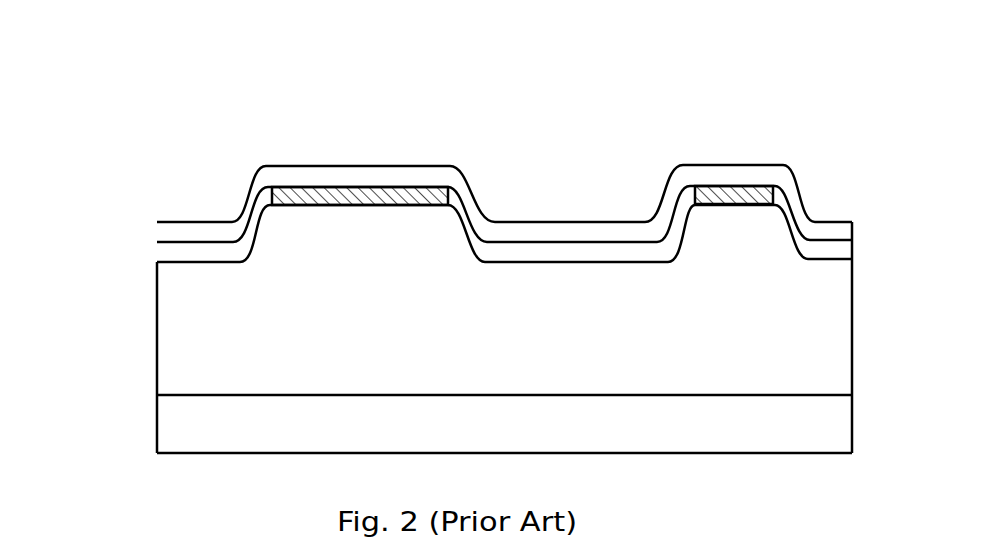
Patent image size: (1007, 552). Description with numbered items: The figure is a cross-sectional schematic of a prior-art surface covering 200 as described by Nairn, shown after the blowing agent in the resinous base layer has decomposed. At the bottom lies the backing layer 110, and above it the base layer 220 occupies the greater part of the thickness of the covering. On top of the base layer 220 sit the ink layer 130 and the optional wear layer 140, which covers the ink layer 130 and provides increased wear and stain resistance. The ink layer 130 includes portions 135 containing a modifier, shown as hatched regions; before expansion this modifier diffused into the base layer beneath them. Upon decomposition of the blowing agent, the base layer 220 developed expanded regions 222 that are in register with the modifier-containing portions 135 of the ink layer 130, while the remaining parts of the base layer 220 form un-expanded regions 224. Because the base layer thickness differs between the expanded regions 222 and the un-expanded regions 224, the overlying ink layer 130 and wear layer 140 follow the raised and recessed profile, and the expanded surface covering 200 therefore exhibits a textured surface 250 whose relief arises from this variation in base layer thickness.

The surface covering 200 is at (466, 28).
The backing layer 110 is at (157, 431).
The base layer 220 is at (157, 338).
The expanded regions 222 is at (290, 243).
The un-expanded regions 224 is at (541, 298).
The ink layer 130 is at (157, 256).
The wear layer 140 is at (157, 228).
The portions of the ink layer containing the modifier 135 is at (368, 186).
The textured surface 250 is at (790, 165).